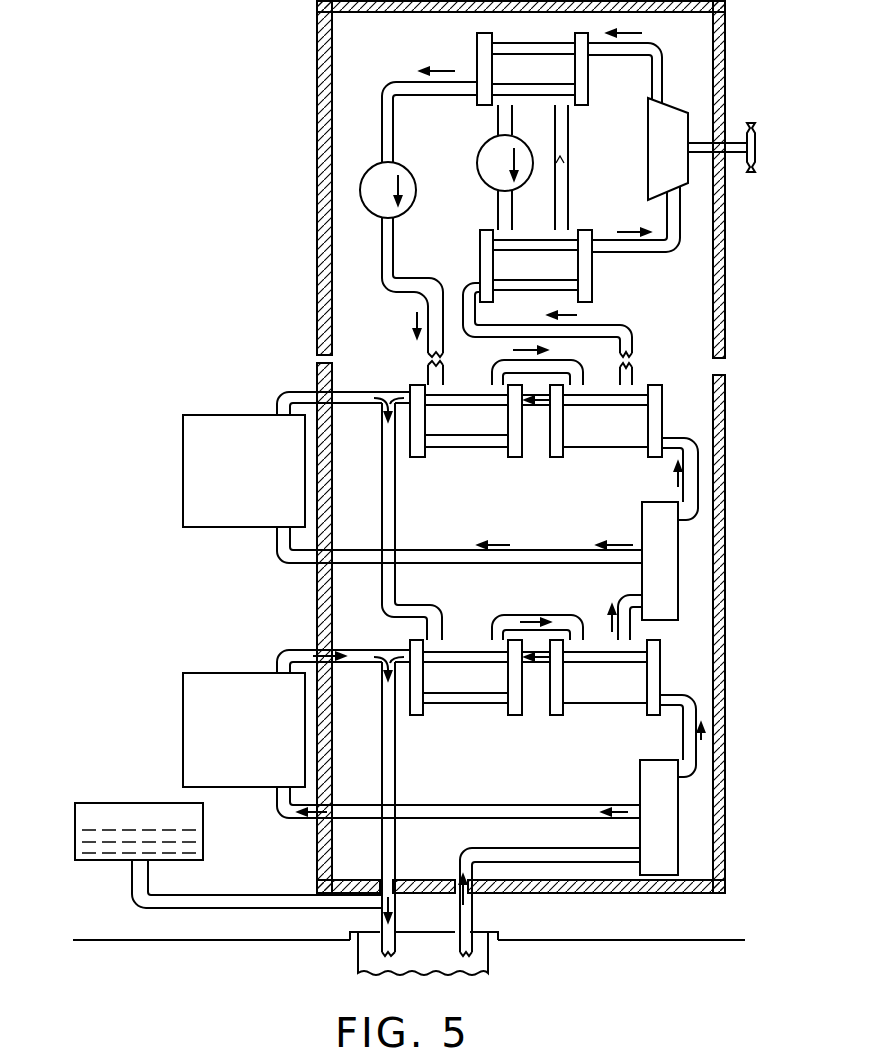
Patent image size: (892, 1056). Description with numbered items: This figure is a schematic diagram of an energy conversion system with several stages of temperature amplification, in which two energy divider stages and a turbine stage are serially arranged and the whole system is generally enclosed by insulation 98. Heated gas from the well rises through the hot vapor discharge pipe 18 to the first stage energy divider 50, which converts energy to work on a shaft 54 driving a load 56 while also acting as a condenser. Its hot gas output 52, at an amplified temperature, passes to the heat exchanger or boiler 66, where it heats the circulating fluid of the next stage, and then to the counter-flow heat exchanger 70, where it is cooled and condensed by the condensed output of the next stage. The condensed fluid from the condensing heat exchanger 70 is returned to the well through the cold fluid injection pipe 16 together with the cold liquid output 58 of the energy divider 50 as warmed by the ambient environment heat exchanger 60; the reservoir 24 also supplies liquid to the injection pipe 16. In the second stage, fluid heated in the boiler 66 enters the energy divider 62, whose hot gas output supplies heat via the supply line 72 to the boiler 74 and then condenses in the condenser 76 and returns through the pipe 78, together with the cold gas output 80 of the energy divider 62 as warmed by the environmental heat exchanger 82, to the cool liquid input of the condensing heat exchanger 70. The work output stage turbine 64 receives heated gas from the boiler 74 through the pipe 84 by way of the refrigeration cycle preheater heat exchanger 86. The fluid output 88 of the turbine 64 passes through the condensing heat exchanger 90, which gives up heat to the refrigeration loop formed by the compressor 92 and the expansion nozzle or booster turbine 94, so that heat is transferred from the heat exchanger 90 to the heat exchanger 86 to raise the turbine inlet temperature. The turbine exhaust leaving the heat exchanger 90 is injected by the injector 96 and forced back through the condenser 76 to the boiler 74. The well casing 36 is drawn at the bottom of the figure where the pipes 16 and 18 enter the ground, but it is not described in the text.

The cold fluid injection pipe 16 is at (402, 914).
The hot vapor discharge pipe 18 is at (478, 914).
The reservoir 24 is at (149, 802).
The well casing 36 is at (354, 932).
The energy divider 50 is at (640, 788).
The hot gas output 52 is at (684, 749).
The shaft 54 is at (734, 141).
The load 56 is at (754, 154).
The cold liquid output 58 is at (542, 809).
The ambient environment heat exchanger 60 is at (256, 672).
The energy divider 62 is at (642, 508).
The turbine 64 is at (648, 137).
The boiler 66 is at (618, 715).
The counter-flow heat exchanger 70 is at (482, 640).
The supply line 72 is at (700, 430).
The boiler 74 is at (666, 372).
The condenser 76 is at (416, 383).
The pipe 78 is at (382, 499).
The cold gas output 80 is at (579, 551).
The environmental heat exchanger 82 is at (264, 415).
The pipe 84 is at (632, 300).
The refrigeration cycle preheater heat exchanger 86 is at (478, 261).
The fluid output 88 is at (661, 78).
The condensing heat exchanger 90 is at (476, 48).
The compressor 92 is at (482, 145).
The expansion nozzle and/or booster turbine 94 is at (558, 166).
The injector 96 is at (368, 172).
The insulation 98 is at (317, 255).